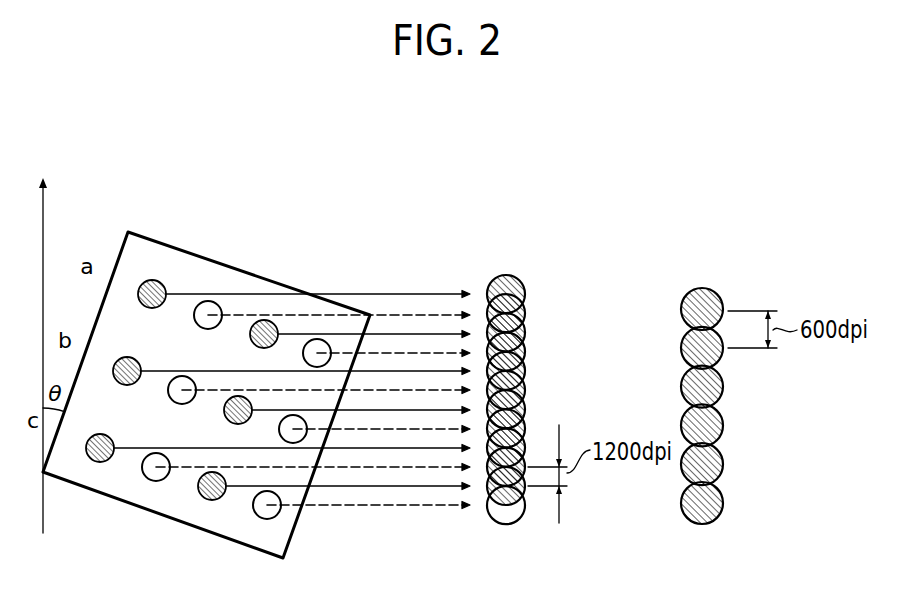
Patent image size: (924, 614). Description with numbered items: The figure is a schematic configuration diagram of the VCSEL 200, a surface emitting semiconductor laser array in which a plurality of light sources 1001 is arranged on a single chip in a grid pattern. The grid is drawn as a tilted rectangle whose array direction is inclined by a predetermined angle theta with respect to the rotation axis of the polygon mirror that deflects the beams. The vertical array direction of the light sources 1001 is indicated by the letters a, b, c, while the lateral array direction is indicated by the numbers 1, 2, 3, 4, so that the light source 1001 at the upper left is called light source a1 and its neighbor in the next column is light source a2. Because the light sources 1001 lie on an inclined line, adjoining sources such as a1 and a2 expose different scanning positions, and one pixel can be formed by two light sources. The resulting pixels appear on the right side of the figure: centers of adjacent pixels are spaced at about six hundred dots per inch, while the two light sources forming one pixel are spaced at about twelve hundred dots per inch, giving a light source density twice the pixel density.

The lateral array direction number 1 is at (278, 339).
The lateral array direction number 2 is at (306, 358).
The lateral array direction number 3 is at (334, 376).
The lateral array direction number 4 is at (361, 395).
The VCSEL 200 is at (248, 272).
The light source 1001 is at (210, 281).